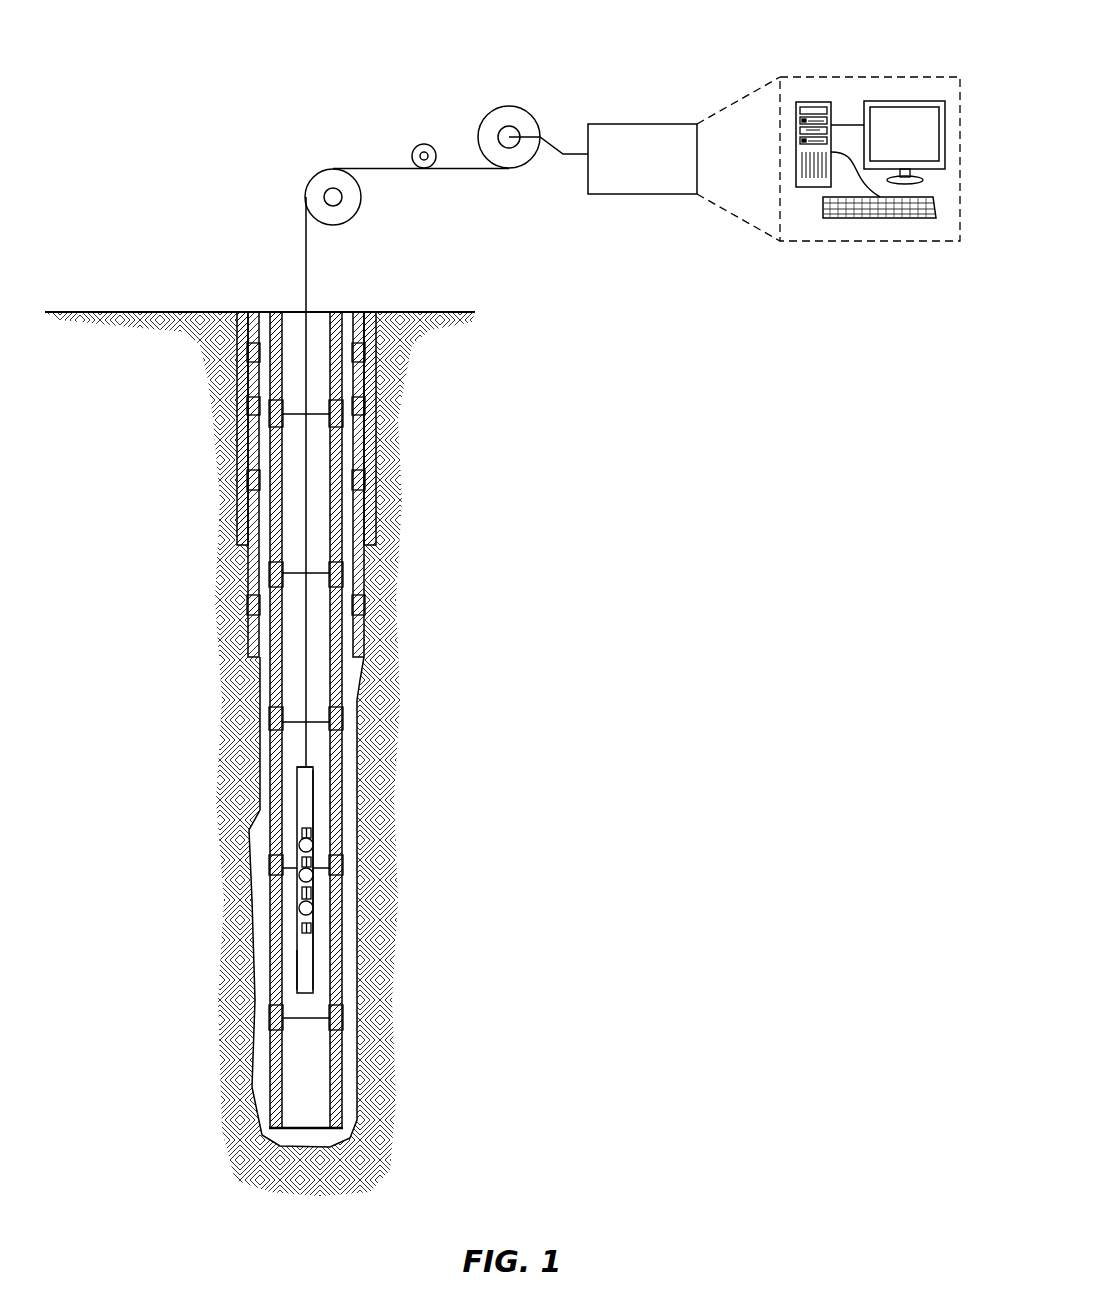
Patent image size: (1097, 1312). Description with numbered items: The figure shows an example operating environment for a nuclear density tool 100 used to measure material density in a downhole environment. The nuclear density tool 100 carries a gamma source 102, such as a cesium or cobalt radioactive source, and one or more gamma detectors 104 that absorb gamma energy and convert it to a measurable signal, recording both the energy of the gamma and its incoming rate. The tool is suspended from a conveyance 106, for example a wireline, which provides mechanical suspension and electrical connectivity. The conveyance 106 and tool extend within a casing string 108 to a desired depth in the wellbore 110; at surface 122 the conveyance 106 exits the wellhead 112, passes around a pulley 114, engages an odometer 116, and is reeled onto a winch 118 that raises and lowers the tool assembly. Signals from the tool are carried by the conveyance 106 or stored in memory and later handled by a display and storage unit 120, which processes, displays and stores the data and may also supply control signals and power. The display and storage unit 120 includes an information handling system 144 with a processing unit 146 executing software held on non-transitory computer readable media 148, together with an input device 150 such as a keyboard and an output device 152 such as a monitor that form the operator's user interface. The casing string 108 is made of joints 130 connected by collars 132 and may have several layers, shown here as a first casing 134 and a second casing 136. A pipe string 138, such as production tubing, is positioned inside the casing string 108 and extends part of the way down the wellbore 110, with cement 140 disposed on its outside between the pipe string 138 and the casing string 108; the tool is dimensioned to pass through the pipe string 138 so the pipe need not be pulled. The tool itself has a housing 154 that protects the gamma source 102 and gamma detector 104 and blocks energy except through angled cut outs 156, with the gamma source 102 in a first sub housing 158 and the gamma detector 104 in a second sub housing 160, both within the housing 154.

The nuclear density tool 100 is at (290, 908).
The gamma source 102 is at (313, 930).
The gamma detector 104 is at (310, 831).
The conveyance 106 is at (306, 272).
The casing string 108 is at (226, 531).
The wellbore 110 is at (357, 657).
The wellhead 112 is at (295, 310).
The pulley 114 is at (307, 183).
The odometer 116 is at (425, 143).
The winch 118 is at (525, 115).
The display and storage unit 120 is at (650, 124).
The surface 122 is at (85, 312).
The joint 130 is at (250, 565).
The collar 132 is at (250, 603).
The first casing 134 is at (357, 568).
The second casing 136 is at (370, 522).
The pipe string 138 is at (343, 1085).
The cement 140 is at (352, 775).
The information handling system 144 is at (853, 77).
The processing unit 146 is at (812, 188).
The non-transitory computer readable media 148 is at (812, 102).
The input device 150 is at (878, 218).
The output device 152 is at (905, 101).
The housing 154 is at (297, 782).
The cut out 156 is at (302, 842).
The first sub housing 158 is at (315, 792).
The second sub housing 160 is at (297, 960).